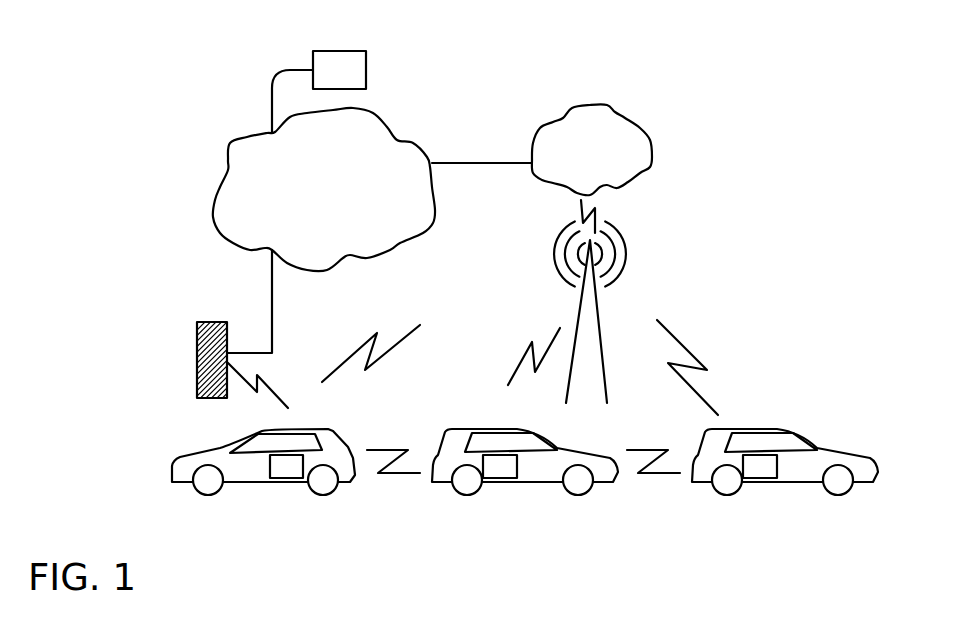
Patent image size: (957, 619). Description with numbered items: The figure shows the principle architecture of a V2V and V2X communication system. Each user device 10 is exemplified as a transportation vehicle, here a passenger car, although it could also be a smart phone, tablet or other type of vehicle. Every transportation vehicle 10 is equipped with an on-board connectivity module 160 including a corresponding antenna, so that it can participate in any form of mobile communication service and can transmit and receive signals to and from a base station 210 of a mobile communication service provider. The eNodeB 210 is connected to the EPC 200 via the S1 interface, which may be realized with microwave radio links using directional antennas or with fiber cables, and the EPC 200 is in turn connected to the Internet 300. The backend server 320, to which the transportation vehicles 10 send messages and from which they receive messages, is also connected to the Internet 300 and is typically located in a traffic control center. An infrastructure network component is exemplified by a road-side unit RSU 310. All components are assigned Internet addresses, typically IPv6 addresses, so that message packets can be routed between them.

The user device 10 is at (233, 470).
The on-board connectivity module 160 is at (287, 470).
The EPC 200 is at (615, 113).
The base station 210 is at (598, 317).
The Internet 300 is at (399, 153).
The road-side unit 310 is at (209, 328).
The backend server 320 is at (353, 63).